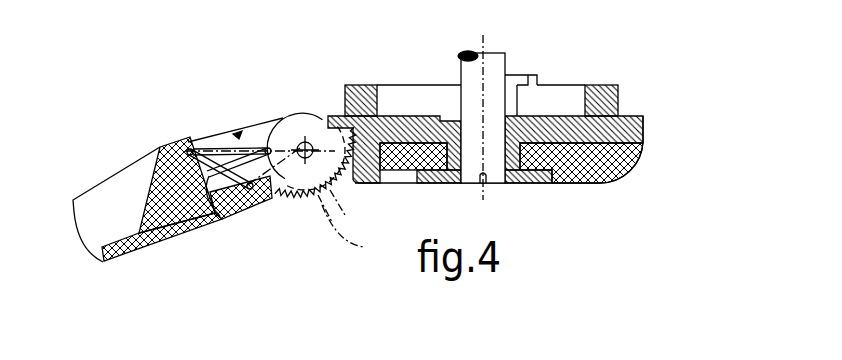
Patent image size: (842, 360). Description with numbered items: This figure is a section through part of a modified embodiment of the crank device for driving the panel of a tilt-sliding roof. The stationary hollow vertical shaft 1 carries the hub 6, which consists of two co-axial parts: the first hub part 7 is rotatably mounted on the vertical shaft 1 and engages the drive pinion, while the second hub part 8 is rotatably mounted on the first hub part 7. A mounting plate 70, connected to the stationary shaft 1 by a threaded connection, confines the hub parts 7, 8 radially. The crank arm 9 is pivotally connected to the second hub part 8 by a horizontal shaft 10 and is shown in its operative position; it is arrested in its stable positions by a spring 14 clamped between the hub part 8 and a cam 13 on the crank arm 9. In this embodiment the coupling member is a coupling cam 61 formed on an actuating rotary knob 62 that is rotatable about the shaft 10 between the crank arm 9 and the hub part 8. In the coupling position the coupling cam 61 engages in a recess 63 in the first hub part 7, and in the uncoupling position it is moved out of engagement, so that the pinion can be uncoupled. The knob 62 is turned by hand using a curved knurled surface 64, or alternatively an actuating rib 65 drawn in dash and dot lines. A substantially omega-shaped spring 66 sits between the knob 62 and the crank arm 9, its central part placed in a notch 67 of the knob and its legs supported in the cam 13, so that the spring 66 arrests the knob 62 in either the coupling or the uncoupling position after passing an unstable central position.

The stationary hollow vertical shaft 1 is at (495, 82).
The hub 6 is at (650, 147).
The first hub part 7 is at (600, 97).
The second hub part 8 is at (623, 167).
The crank arm 9 is at (97, 359).
The horizontal shaft 10 is at (300, 146).
The cam 13 is at (160, 147).
The spring 14 is at (228, 188).
The coupling cam 61 is at (343, 116).
The actuating rotary knob 62 is at (313, 192).
The recess 63 is at (387, 130).
The knurled surface 64 is at (300, 202).
The actuating rib 65 is at (345, 195).
The omega-shaped spring 66 is at (210, 145).
The notch 67 is at (250, 191).
The mounting plate 70 is at (540, 186).